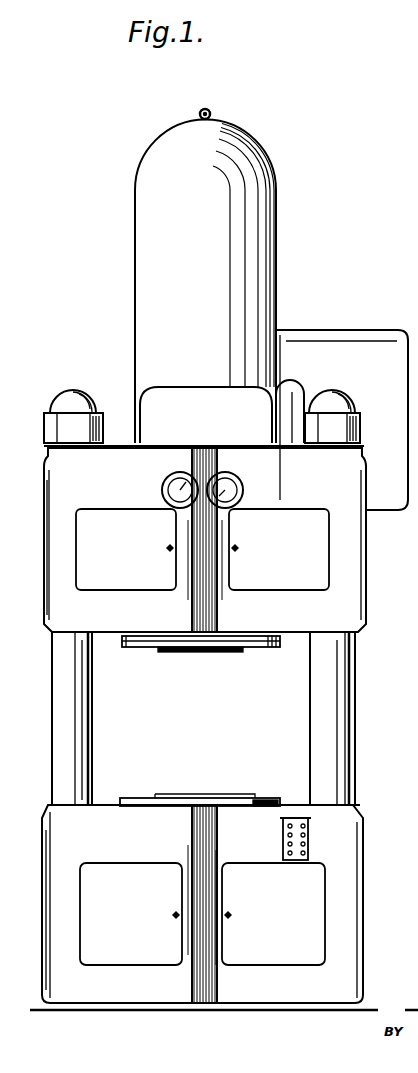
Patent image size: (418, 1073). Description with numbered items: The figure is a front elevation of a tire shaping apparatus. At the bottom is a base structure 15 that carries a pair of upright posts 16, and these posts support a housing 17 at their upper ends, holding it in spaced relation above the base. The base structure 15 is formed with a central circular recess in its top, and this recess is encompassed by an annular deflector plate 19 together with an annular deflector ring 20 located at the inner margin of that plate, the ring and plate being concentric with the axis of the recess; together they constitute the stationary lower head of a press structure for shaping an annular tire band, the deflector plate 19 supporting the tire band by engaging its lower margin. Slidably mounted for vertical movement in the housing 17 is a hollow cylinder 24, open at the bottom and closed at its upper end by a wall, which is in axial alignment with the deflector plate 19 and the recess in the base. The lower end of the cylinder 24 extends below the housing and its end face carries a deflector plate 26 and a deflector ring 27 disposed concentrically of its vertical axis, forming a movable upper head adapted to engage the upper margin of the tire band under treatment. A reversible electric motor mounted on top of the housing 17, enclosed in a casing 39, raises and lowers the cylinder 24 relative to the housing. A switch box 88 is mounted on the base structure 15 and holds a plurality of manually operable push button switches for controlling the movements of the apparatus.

The base structure 15 is at (58, 850).
The upright posts 16 is at (60, 732).
The housing 17 is at (350, 592).
The annular deflector plate 19 is at (256, 801).
The annular deflector ring 20 is at (160, 798).
The hollow cylinder 24 is at (267, 650).
The deflector plate 26 is at (134, 648).
The deflector ring 27 is at (168, 653).
The casing 39 is at (367, 352).
The switch box 88 is at (308, 835).